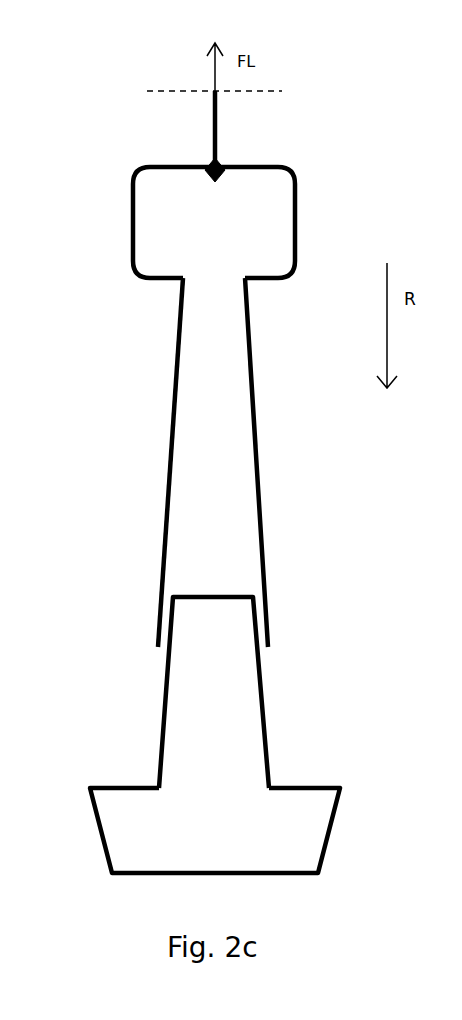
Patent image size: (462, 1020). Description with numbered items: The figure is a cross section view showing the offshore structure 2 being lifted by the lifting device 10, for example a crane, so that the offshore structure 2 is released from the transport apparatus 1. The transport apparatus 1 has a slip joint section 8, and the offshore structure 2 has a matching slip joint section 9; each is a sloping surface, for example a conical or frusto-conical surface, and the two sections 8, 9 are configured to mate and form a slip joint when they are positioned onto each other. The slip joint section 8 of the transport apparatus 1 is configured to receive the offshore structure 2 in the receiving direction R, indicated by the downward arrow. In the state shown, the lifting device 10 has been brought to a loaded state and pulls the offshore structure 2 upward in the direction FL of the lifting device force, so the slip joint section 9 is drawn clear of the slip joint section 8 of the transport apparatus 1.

The transport apparatus 1 is at (147, 820).
The offshore structure 2 is at (198, 342).
The slip joint section 8 is at (163, 698).
The slip joint section 9 is at (257, 507).
The lifting device 10 is at (215, 110).